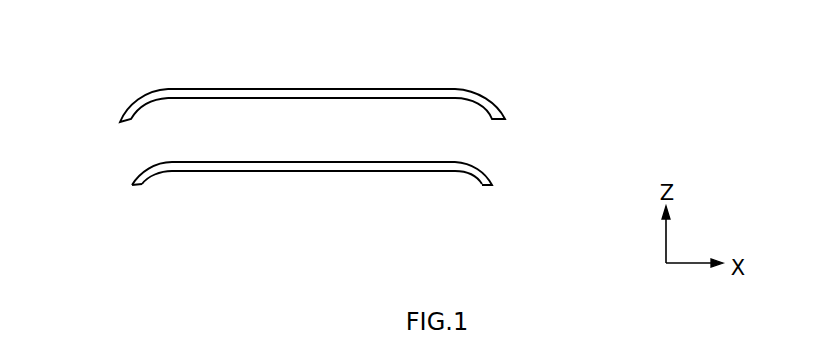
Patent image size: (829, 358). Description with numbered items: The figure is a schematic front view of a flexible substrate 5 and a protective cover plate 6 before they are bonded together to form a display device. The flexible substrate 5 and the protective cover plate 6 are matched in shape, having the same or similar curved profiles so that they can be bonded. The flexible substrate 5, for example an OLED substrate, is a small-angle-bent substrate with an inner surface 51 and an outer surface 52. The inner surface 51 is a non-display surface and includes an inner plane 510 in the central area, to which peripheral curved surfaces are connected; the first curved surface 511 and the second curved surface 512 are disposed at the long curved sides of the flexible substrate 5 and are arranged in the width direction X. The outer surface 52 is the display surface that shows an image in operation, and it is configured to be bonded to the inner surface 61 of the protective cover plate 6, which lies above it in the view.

The flexible substrate 5 is at (381, 142).
The inner surface 51 is at (226, 184).
The inner plane 510 is at (333, 172).
The first curved surface 511 is at (153, 173).
The second curved surface 512 is at (467, 175).
The outer surface 52 is at (311, 152).
The protective cover plate 6 is at (372, 183).
The inner surface 61 is at (407, 98).